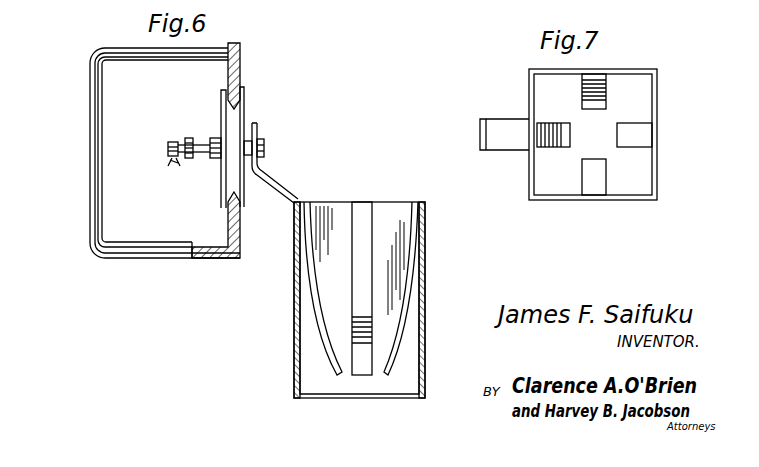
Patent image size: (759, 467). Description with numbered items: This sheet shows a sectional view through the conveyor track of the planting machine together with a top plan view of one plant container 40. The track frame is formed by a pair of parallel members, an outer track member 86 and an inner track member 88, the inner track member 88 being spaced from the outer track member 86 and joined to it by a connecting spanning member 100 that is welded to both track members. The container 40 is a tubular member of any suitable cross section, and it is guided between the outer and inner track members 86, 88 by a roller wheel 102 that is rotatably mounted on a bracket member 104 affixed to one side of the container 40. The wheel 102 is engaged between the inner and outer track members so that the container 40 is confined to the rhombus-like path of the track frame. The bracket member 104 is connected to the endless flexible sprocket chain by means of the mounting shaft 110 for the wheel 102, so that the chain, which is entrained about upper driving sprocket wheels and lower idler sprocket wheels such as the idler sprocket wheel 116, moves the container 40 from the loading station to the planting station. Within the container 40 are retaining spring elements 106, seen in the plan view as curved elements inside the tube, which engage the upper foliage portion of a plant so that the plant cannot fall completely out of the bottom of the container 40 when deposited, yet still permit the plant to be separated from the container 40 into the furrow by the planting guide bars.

In FIG. 6, the container 40 is at (423, 330).
In FIG. 6, the outer track member 86 is at (240, 73).
In FIG. 6, the inner track member 88 is at (238, 233).
In FIG. 6, the connecting spanning member 100 is at (92, 103).
In FIG. 6, the roller wheel 102 is at (241, 115).
In FIG. 6, the bracket member 104 is at (283, 192).
In FIG. 7, the bracket member 104 is at (498, 125).
In FIG. 6, the retaining spring element 106 is at (320, 338).
In FIG. 7, the retaining spring element 106 is at (628, 125).
In FIG. 6, the mounting shaft 110 is at (202, 135).
In FIG. 6, the lower idler sprocket wheel 116 is at (56, 6).